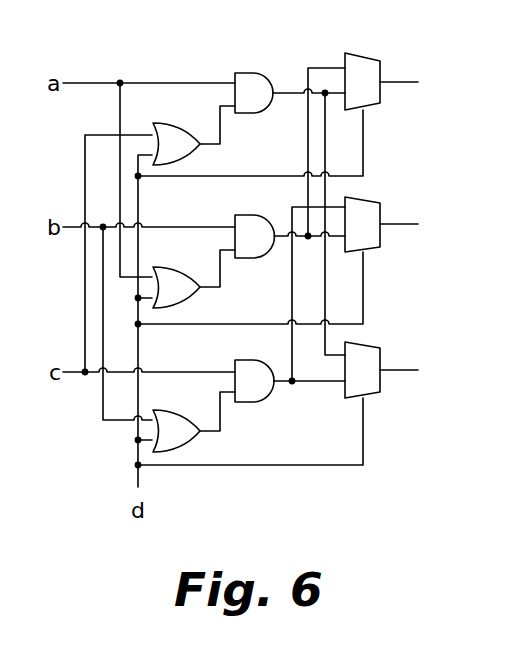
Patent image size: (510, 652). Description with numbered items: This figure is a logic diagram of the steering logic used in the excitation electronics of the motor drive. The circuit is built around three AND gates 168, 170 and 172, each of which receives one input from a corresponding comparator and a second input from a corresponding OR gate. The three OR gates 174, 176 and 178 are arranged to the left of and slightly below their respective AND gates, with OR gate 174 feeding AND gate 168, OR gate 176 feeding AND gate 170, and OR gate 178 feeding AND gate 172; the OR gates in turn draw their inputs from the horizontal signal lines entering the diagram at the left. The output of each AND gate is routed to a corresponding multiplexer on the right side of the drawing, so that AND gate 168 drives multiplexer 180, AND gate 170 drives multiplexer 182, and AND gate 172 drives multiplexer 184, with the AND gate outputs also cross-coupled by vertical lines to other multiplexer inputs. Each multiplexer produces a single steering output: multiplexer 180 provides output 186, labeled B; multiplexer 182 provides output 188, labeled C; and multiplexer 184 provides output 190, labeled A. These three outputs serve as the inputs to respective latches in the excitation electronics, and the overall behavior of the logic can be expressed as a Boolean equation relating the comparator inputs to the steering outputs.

The AND gate 168 is at (268, 77).
The AND gate 170 is at (243, 215).
The AND gate 172 is at (247, 359).
The OR gate 174 is at (190, 156).
The OR gate 176 is at (190, 300).
The OR gate 178 is at (190, 444).
The multiplexer 180 is at (370, 110).
The multiplexer 182 is at (370, 250).
The multiplexer 184 is at (370, 396).
The output B 186 is at (397, 82).
The output C 188 is at (397, 224).
The output A 190 is at (397, 370).